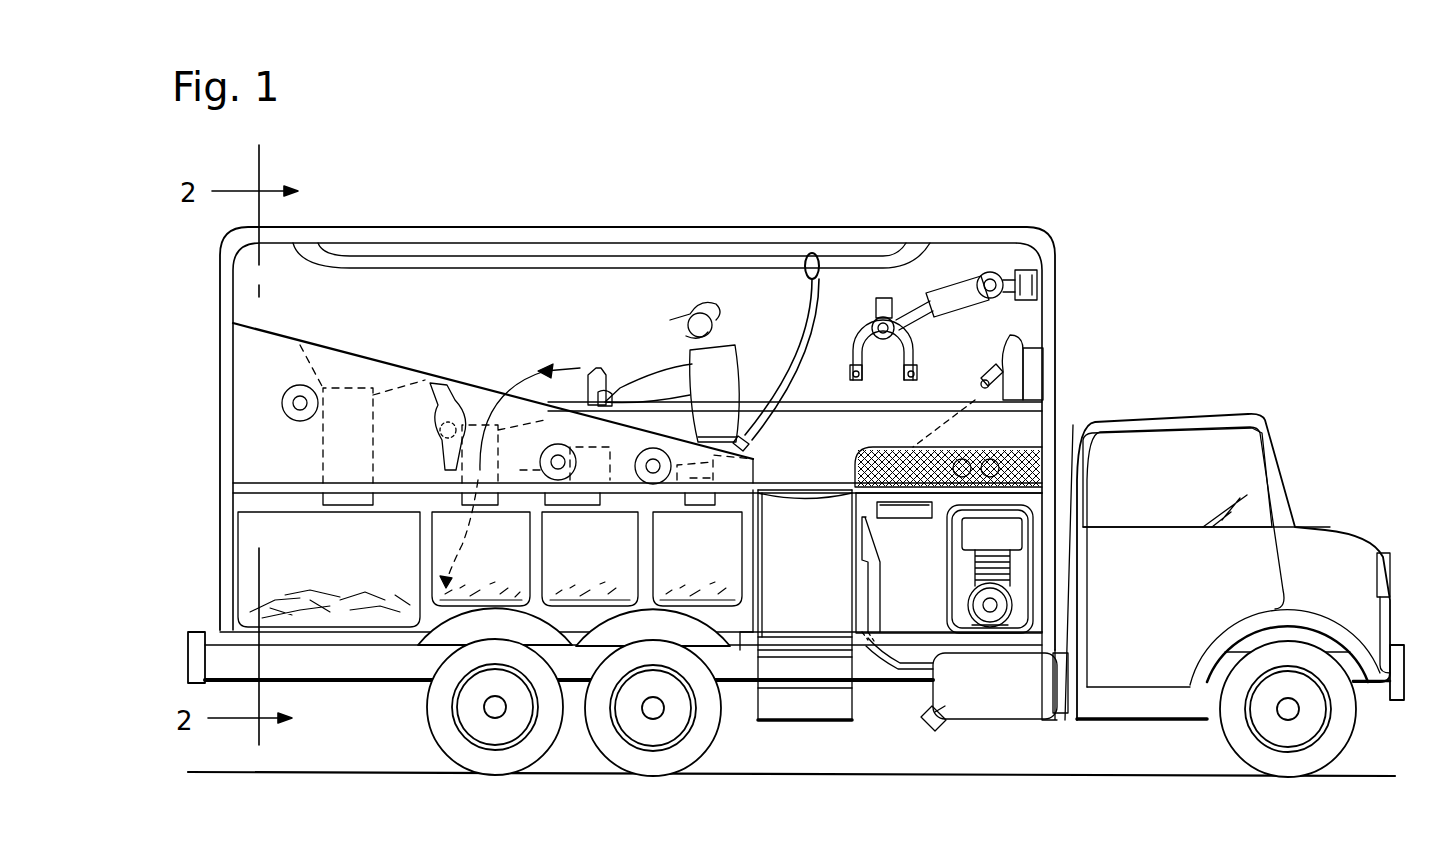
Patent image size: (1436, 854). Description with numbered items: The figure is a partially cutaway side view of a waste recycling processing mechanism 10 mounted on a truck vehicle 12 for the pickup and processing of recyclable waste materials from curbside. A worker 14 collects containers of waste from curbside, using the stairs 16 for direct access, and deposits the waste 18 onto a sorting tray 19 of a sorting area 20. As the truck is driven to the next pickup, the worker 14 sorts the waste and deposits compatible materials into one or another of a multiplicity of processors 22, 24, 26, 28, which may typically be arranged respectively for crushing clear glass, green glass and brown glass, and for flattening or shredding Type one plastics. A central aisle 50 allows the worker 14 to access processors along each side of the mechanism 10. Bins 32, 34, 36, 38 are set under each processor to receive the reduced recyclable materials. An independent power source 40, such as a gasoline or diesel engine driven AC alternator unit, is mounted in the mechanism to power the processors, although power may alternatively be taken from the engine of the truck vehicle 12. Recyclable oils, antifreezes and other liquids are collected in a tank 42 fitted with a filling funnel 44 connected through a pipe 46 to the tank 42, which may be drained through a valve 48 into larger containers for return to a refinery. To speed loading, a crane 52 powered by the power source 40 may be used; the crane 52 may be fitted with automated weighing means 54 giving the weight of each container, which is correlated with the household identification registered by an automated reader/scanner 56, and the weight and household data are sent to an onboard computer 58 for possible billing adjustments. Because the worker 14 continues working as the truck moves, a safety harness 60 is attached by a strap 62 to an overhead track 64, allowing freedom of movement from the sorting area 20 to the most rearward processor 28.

The waste recycling processing mechanism 10 is at (1032, 238).
The truck vehicle 12 is at (1248, 418).
The worker 14 is at (740, 352).
The stairs 16 is at (742, 700).
The waste 18 is at (935, 447).
The sorting tray 19 is at (1013, 423).
The sorting area 20 is at (992, 446).
The processor 22 is at (757, 468).
The processor 24 is at (622, 492).
The processor 26 is at (460, 470).
The processor 28 is at (323, 418).
The bin 32 is at (741, 582).
The bin 34 is at (639, 582).
The bin 36 is at (529, 582).
The bin 38 is at (418, 582).
The independent power source 40 is at (972, 577).
The tank 42 is at (1017, 720).
The filling funnel 44 is at (851, 536).
The pipe 46 is at (866, 616).
The valve 48 is at (938, 730).
The central aisle 50 is at (775, 605).
The crane 52 is at (862, 322).
The automated weighing means 54 is at (885, 300).
The automated reader/scanner 56 is at (1000, 358).
The onboard computer 58 is at (888, 522).
The safety harness 60 is at (748, 447).
The strap 62 is at (804, 252).
The overhead track 64 is at (568, 272).